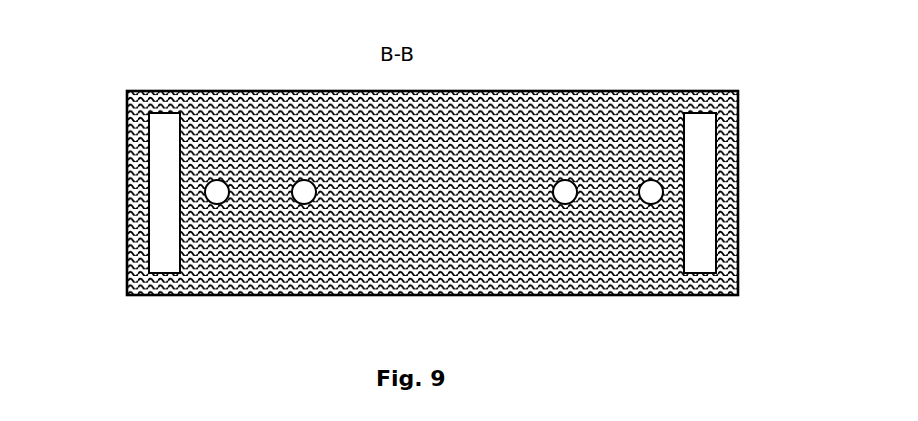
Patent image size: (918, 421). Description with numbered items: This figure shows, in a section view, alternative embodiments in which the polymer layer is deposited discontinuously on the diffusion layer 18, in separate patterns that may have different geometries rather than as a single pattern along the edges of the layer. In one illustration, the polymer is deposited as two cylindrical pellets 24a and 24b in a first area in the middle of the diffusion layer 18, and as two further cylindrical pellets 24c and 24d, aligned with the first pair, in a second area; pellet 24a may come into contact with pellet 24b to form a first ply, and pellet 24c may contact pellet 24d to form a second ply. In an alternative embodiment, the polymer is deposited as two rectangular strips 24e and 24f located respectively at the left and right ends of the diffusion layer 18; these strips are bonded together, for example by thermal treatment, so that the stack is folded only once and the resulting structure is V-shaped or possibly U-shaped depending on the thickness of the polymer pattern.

The diffusion layer 18 is at (118, 232).
The cylindrical pellet 24a is at (207, 196).
The cylindrical pellet 24b is at (296, 196).
The cylindrical pellet 24c is at (557, 172).
The cylindrical pellet 24d is at (640, 172).
The rectangular strip 24e is at (118, 155).
The rectangular strip 24f is at (730, 171).